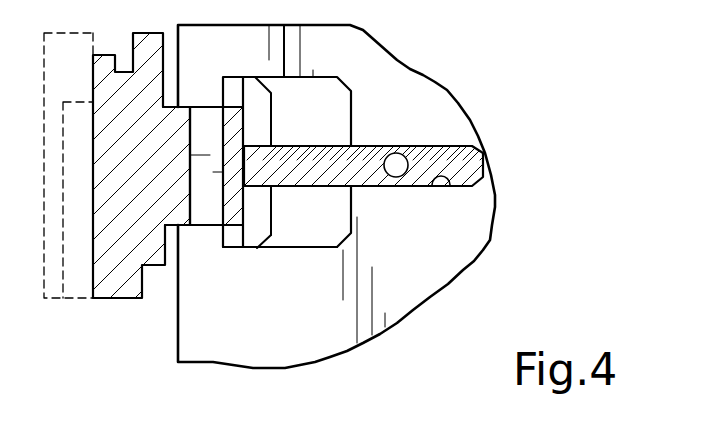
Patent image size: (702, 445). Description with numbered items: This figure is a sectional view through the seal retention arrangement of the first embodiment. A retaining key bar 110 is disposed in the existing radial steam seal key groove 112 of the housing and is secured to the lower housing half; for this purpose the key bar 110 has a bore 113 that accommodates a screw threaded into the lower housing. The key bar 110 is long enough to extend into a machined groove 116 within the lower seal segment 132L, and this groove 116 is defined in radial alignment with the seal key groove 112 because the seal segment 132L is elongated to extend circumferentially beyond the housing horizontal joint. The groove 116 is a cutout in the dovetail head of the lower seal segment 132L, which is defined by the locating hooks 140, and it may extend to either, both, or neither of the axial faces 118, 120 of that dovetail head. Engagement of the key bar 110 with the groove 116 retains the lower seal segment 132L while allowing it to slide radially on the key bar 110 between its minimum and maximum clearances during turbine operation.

The retaining key bar 110 is at (462, 144).
The radial steam seal key groove 112 is at (452, 186).
The bore 113 is at (405, 155).
The machined groove 116 is at (266, 202).
The axial face of the dovetail head 118 is at (250, 248).
The axial face of the dovetail head 120 is at (244, 77).
The locating hooks 140 is at (258, 227).
The lower seal segment 132L is at (112, 283).